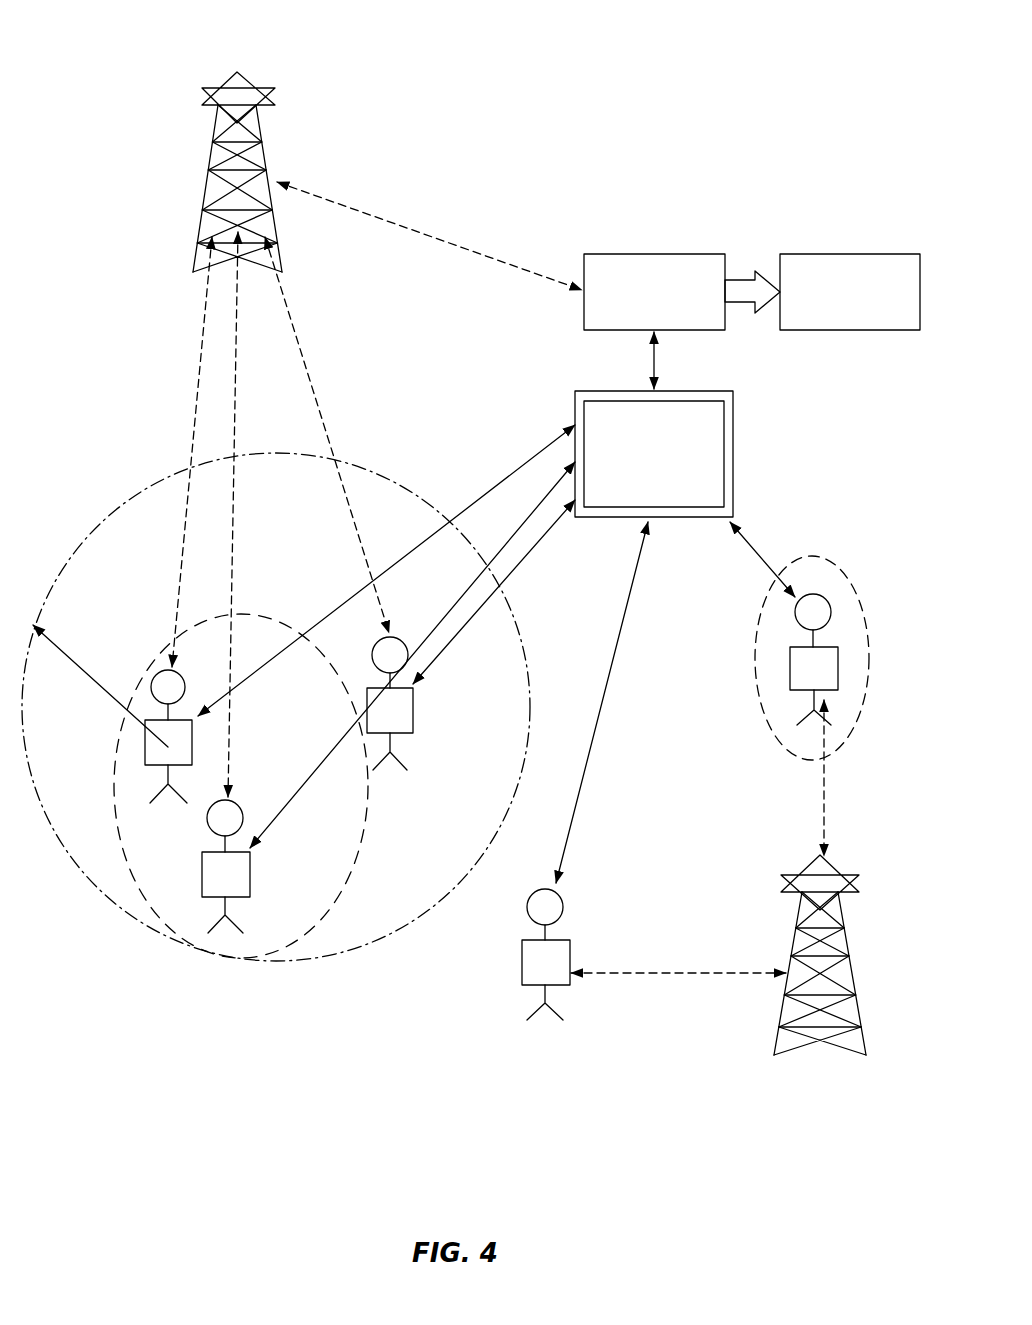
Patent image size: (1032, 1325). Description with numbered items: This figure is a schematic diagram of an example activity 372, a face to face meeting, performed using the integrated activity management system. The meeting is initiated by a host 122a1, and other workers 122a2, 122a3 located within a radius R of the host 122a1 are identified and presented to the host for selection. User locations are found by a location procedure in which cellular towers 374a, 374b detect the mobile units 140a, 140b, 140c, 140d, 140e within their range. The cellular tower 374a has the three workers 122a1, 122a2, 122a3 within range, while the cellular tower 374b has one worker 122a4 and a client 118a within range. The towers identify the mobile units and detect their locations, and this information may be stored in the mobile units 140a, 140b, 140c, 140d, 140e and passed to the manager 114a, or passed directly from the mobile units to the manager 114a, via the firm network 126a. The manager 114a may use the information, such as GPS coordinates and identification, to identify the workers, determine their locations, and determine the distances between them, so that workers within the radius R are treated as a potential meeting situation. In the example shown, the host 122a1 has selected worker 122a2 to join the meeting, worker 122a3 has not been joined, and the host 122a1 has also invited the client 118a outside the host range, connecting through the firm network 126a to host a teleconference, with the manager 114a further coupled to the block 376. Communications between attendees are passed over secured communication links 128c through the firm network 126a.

The activity 372 is at (148, 196).
The cellular tower 374a is at (242, 74).
The cellular tower 374b is at (832, 851).
The manager 114a is at (654, 292).
The remote system 376 is at (850, 292).
The firm network 126a is at (654, 454).
The secured communication links 128c is at (518, 458).
The host worker 122a1 is at (154, 673).
The worker 122a2 is at (244, 818).
The worker 122a3 is at (402, 640).
The worker 122a4 is at (564, 906).
The mobile unit 140a is at (144, 746).
The mobile unit 140b is at (251, 875).
The mobile unit 140c is at (414, 712).
The mobile unit 140d is at (571, 962).
The mobile unit 140e is at (839, 670).
The client 118a is at (833, 612).
The radius R is at (100, 686).